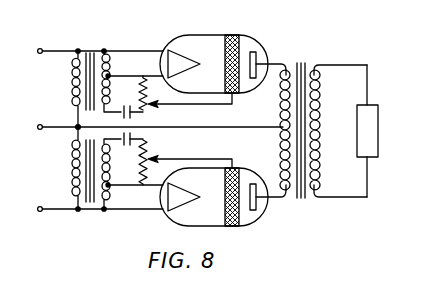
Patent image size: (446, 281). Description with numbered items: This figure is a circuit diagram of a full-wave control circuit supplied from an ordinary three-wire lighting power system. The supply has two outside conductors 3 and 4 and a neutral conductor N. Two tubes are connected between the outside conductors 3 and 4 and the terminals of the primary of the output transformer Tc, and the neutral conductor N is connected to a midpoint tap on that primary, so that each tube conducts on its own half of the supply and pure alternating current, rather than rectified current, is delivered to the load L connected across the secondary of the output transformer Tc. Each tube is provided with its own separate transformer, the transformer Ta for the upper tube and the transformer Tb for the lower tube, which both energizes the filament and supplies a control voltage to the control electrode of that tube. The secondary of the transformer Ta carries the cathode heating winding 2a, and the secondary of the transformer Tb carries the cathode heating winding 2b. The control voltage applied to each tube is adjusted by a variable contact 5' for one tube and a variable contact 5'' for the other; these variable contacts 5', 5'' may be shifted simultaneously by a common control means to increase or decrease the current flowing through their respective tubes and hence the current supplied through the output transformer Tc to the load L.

The outside conductor 3 is at (90, 52).
The neutral conductor N is at (149, 128).
The outside conductor 4 is at (90, 210).
The transformer Ta is at (93, 89).
The transformer Tb is at (93, 168).
The output transformer Tc is at (313, 58).
The winding 2a is at (110, 63).
The winding 2b is at (110, 197).
The variable contact 5' is at (190, 109).
The variable contact 5'' is at (190, 155).
The load L is at (367, 131).